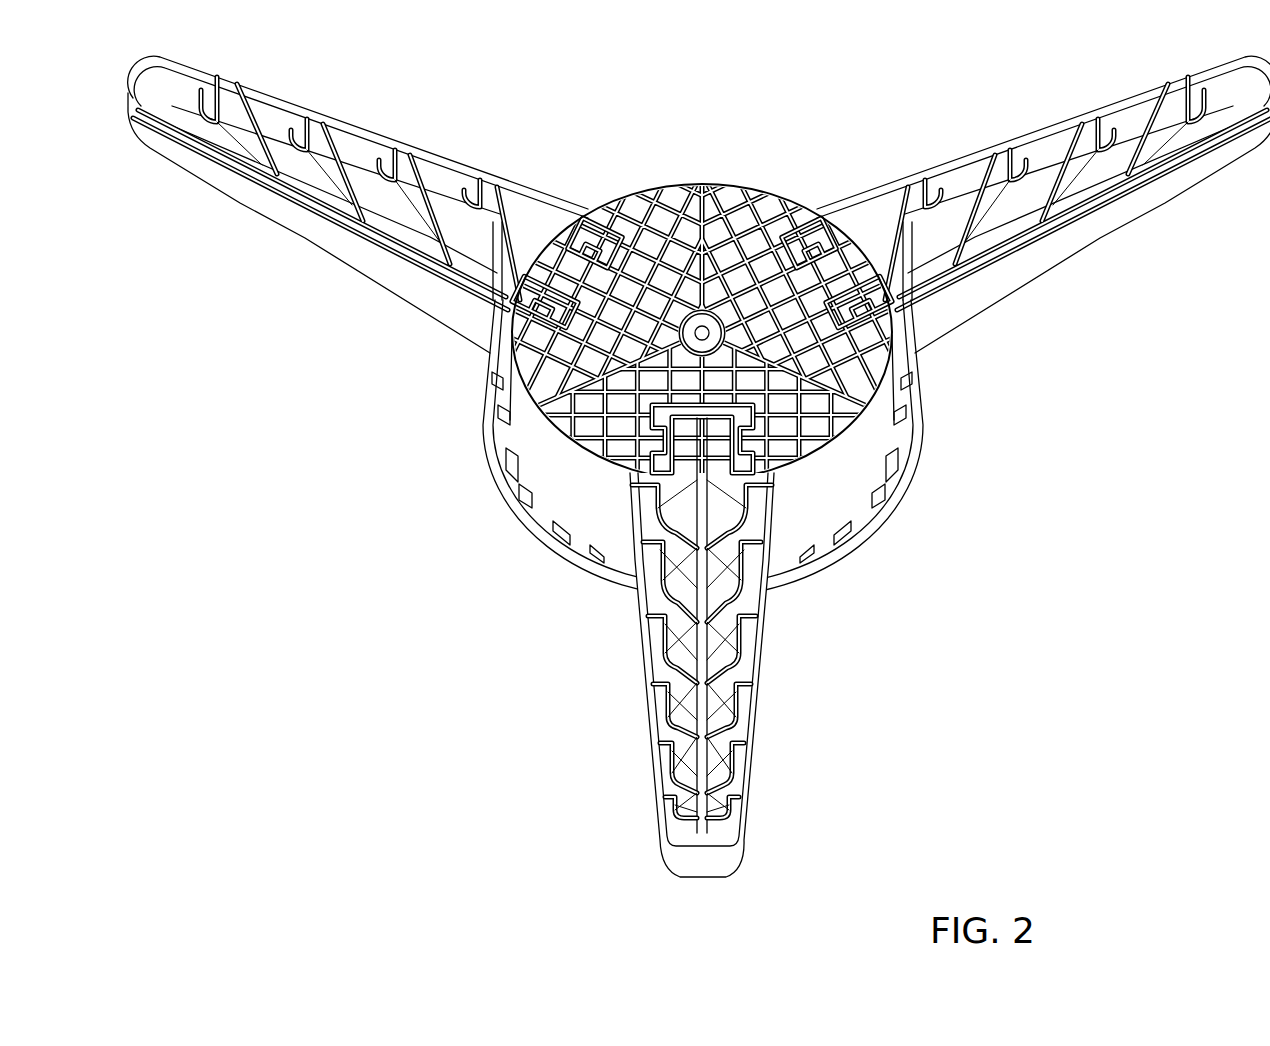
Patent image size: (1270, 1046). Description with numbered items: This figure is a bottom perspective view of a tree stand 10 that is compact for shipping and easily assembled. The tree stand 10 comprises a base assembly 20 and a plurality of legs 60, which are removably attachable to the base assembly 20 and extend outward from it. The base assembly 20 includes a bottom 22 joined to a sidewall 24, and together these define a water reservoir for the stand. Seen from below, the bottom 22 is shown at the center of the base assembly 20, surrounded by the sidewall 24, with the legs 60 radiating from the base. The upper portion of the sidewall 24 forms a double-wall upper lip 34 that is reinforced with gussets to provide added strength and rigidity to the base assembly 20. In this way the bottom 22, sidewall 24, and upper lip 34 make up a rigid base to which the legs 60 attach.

The tree stand 10 is at (471, 584).
The base assembly 20 is at (702, 278).
The bottom 22 is at (774, 191).
The sidewall 24 is at (798, 502).
The double-wall upper lip 34 is at (512, 508).
The legs 60 is at (1128, 210).